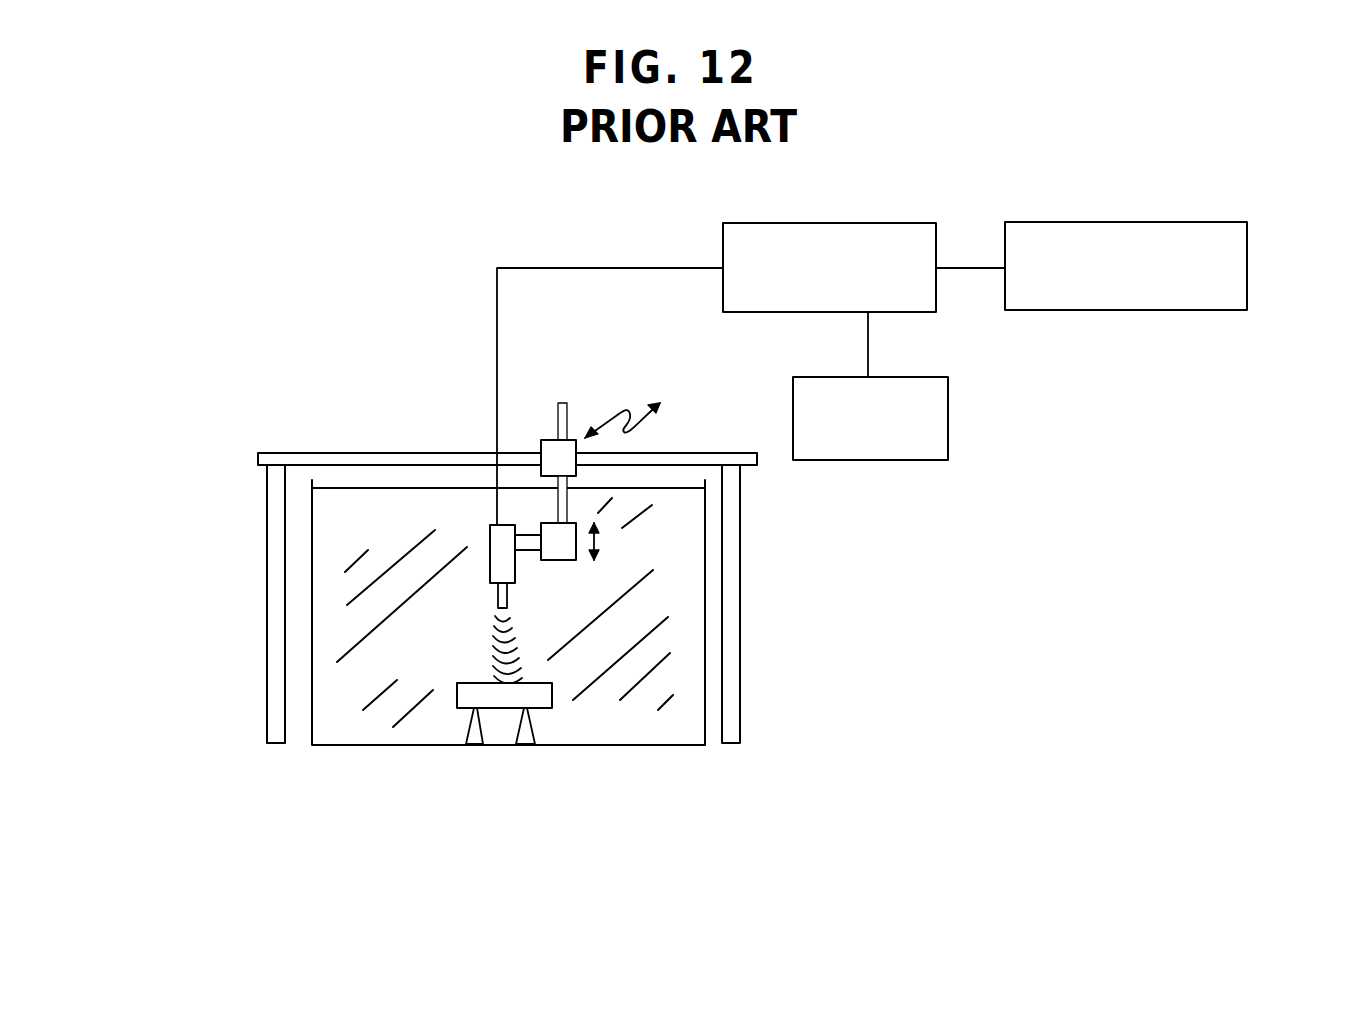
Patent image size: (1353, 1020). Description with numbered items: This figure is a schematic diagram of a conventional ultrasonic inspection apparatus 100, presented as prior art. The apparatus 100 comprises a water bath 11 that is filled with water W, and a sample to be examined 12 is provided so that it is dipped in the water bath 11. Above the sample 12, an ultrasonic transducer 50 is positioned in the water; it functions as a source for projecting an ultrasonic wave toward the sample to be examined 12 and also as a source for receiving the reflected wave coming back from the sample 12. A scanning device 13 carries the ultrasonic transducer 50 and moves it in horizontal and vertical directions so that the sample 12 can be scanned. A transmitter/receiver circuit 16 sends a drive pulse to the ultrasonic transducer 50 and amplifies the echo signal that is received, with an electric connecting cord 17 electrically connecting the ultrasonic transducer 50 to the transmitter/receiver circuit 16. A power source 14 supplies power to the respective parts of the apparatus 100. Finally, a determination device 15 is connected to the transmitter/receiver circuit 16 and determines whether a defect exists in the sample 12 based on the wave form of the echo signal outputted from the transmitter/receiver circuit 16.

The conventional ultrasonic inspection apparatus 100 is at (312, 325).
The water bath 11 is at (312, 603).
The sample to be examined 12 is at (545, 707).
The scanning device 13 is at (572, 483).
The power source 14 is at (948, 403).
The determination device 15 is at (1102, 220).
The transmitter/receiver circuit 16 is at (895, 222).
The electric connecting cord 17 is at (628, 267).
The ultrasonic transducer 50 is at (490, 552).
The water W is at (668, 732).